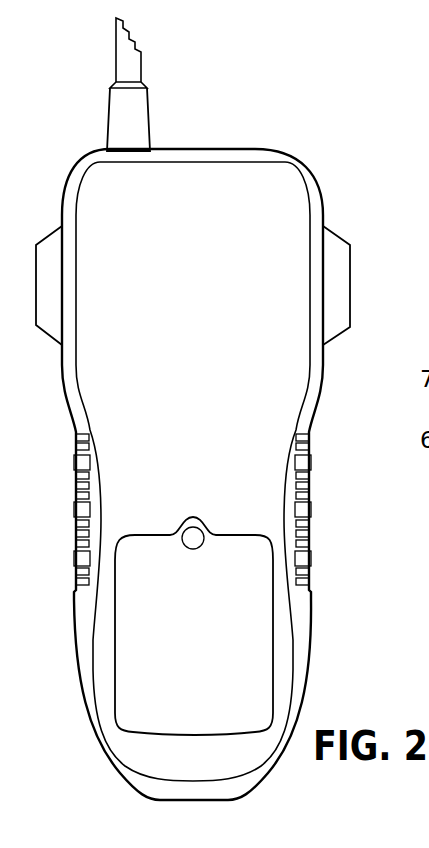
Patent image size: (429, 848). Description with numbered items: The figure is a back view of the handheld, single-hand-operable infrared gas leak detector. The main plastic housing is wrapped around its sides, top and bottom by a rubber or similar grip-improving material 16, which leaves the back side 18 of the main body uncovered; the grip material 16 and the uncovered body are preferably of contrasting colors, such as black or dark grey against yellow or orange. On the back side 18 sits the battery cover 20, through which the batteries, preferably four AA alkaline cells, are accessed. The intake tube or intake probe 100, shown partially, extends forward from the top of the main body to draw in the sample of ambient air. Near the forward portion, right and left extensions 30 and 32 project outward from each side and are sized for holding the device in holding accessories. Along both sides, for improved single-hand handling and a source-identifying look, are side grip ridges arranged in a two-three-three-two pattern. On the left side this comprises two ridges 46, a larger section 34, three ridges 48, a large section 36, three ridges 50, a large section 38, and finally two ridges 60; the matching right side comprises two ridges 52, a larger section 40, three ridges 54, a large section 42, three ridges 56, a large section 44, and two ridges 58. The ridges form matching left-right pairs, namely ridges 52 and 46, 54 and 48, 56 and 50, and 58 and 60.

The grip material 16 is at (216, 148).
The back side 18 is at (183, 294).
The battery cover 20 is at (183, 654).
The right extension 30 is at (35, 262).
The left extension 32 is at (351, 262).
The larger section 34 is at (311, 463).
The large section 36 is at (311, 510).
The large section 38 is at (311, 559).
The larger section 40 is at (74, 463).
The large section 42 is at (74, 510).
The large section 44 is at (74, 559).
The side grip ridges 46 is at (309, 446).
The side grip ridges 48 is at (309, 485).
The side grip ridges 50 is at (309, 533).
The side grip ridges 52 is at (76, 446).
The side grip ridges 54 is at (76, 485).
The side grip ridges 56 is at (76, 533).
The side grip ridges 58 is at (76, 581).
The side grip ridges 60 is at (309, 581).
The intake probe 100 is at (143, 62).